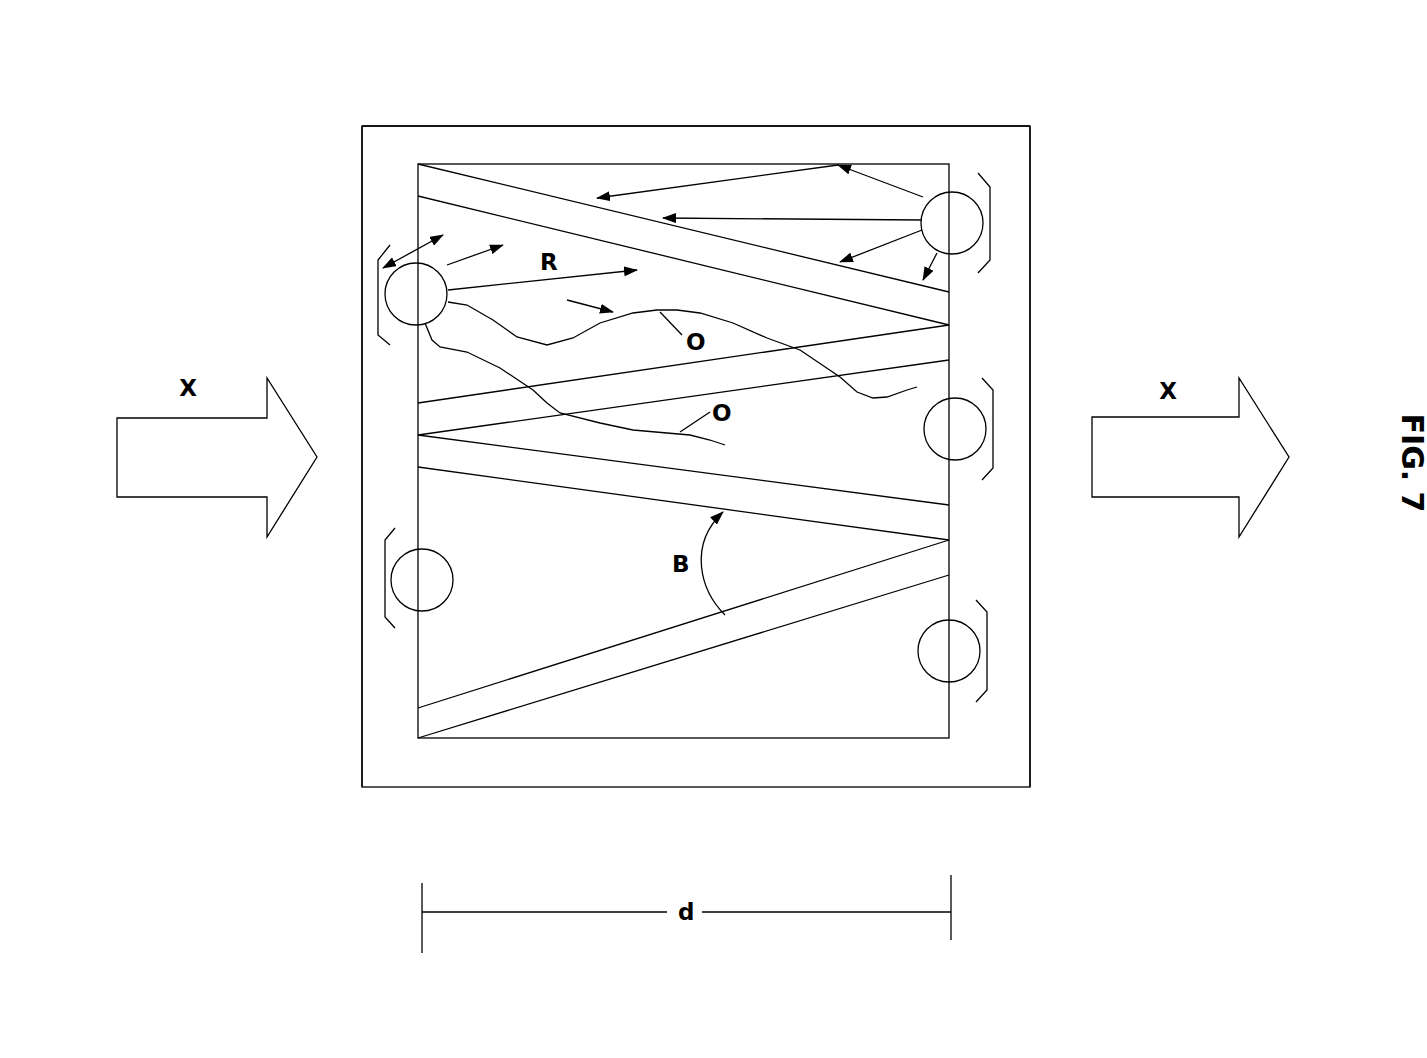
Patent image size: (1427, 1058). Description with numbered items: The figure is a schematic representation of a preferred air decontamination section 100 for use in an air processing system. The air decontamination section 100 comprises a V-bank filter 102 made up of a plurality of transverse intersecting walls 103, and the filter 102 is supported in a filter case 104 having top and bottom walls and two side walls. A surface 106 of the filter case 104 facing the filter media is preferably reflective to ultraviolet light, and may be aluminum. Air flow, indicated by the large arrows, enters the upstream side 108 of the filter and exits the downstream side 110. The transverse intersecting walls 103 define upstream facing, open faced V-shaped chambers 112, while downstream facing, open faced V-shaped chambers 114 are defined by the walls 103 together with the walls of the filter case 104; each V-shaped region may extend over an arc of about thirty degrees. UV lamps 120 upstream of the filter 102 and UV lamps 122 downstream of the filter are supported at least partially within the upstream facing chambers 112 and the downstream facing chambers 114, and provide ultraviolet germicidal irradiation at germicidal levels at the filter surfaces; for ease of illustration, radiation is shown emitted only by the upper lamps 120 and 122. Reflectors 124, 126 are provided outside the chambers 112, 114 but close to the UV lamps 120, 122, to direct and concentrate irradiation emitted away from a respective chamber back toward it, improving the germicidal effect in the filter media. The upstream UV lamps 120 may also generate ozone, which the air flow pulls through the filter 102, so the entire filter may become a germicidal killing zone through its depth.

The air decontamination section 100 is at (312, 177).
The V-bank filter 102 is at (477, 120).
The transverse intersecting walls 103 is at (513, 182).
The filter case 104 is at (695, 126).
The surface 106 is at (885, 164).
The upstream side 108 is at (362, 228).
The downstream side 110 is at (1030, 242).
The upstream facing V-shaped chambers 112 is at (572, 334).
The downstream facing V-shaped chambers 114 is at (838, 217).
The upstream UV lamps 120 is at (407, 326).
The downstream UV lamps 122 is at (962, 195).
The upstream reflectors 124 is at (377, 300).
The downstream reflectors 126 is at (992, 198).